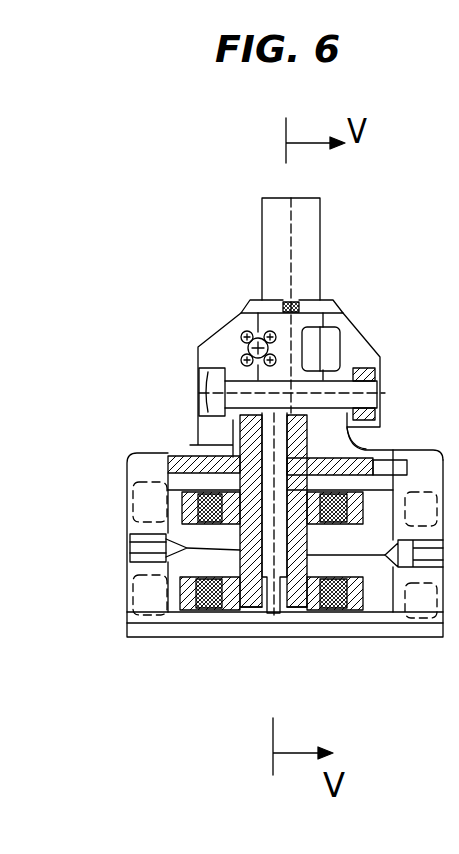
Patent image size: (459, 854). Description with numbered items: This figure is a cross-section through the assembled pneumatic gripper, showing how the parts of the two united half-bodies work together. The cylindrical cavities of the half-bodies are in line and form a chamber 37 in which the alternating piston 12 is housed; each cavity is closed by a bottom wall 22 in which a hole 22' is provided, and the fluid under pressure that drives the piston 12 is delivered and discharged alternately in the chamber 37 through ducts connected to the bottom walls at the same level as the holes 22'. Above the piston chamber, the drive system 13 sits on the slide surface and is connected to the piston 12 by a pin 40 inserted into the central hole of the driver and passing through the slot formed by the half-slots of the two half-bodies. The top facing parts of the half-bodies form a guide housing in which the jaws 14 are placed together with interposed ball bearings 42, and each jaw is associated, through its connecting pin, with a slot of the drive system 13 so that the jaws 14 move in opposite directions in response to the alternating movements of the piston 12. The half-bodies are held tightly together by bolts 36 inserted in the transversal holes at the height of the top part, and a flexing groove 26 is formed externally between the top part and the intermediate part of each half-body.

The jaws 14 is at (320, 252).
The ball bearings 42 is at (243, 330).
The bolts 36 is at (360, 351).
The drive system 13 is at (186, 458).
The flexing groove 26 is at (363, 440).
The bottom wall 22 is at (126, 564).
The hole 22' is at (241, 615).
The alternating piston 12 is at (252, 585).
The pin 40 is at (280, 548).
The chamber 37 is at (383, 600).